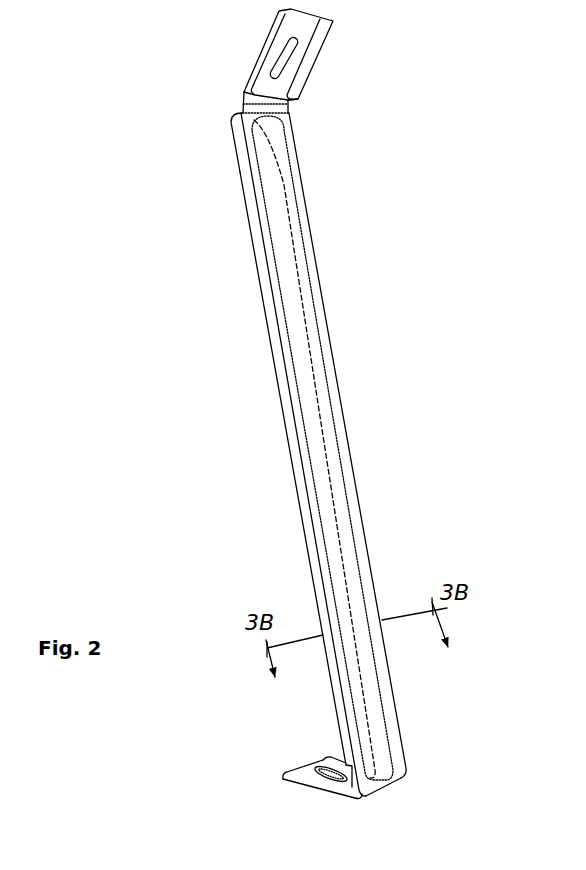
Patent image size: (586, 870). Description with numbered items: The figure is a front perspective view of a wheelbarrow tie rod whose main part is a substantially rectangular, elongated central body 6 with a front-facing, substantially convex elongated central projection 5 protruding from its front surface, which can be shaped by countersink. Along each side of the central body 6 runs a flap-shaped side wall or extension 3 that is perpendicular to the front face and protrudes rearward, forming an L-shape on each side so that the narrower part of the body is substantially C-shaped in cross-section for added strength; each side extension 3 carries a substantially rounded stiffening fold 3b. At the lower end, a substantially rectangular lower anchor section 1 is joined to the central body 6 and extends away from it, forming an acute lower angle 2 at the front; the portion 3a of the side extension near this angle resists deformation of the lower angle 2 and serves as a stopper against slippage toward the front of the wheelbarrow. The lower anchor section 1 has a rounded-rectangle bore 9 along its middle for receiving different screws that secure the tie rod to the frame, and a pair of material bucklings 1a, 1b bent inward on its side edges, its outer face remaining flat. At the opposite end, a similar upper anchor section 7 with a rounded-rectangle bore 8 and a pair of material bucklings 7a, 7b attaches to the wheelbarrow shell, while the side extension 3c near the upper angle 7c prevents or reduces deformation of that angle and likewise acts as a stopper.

The lower anchor section 1 is at (274, 744).
The material buckling 1a is at (285, 778).
The material buckling 1b is at (337, 752).
The acute lower angle 2 is at (402, 778).
The side walls or extensions 3 is at (334, 477).
The portion of side extension 3a is at (352, 767).
The stiffening fold 3b is at (285, 358).
The side extension 3c is at (235, 125).
The central projection 5 is at (340, 520).
The central body 6 is at (348, 320).
The upper anchor section 7 is at (290, 65).
The material buckling 7a is at (317, 65).
The material buckling 7b is at (260, 48).
The upper angle 7c is at (277, 113).
The bore 8 is at (278, 77).
The bore 9 is at (338, 777).